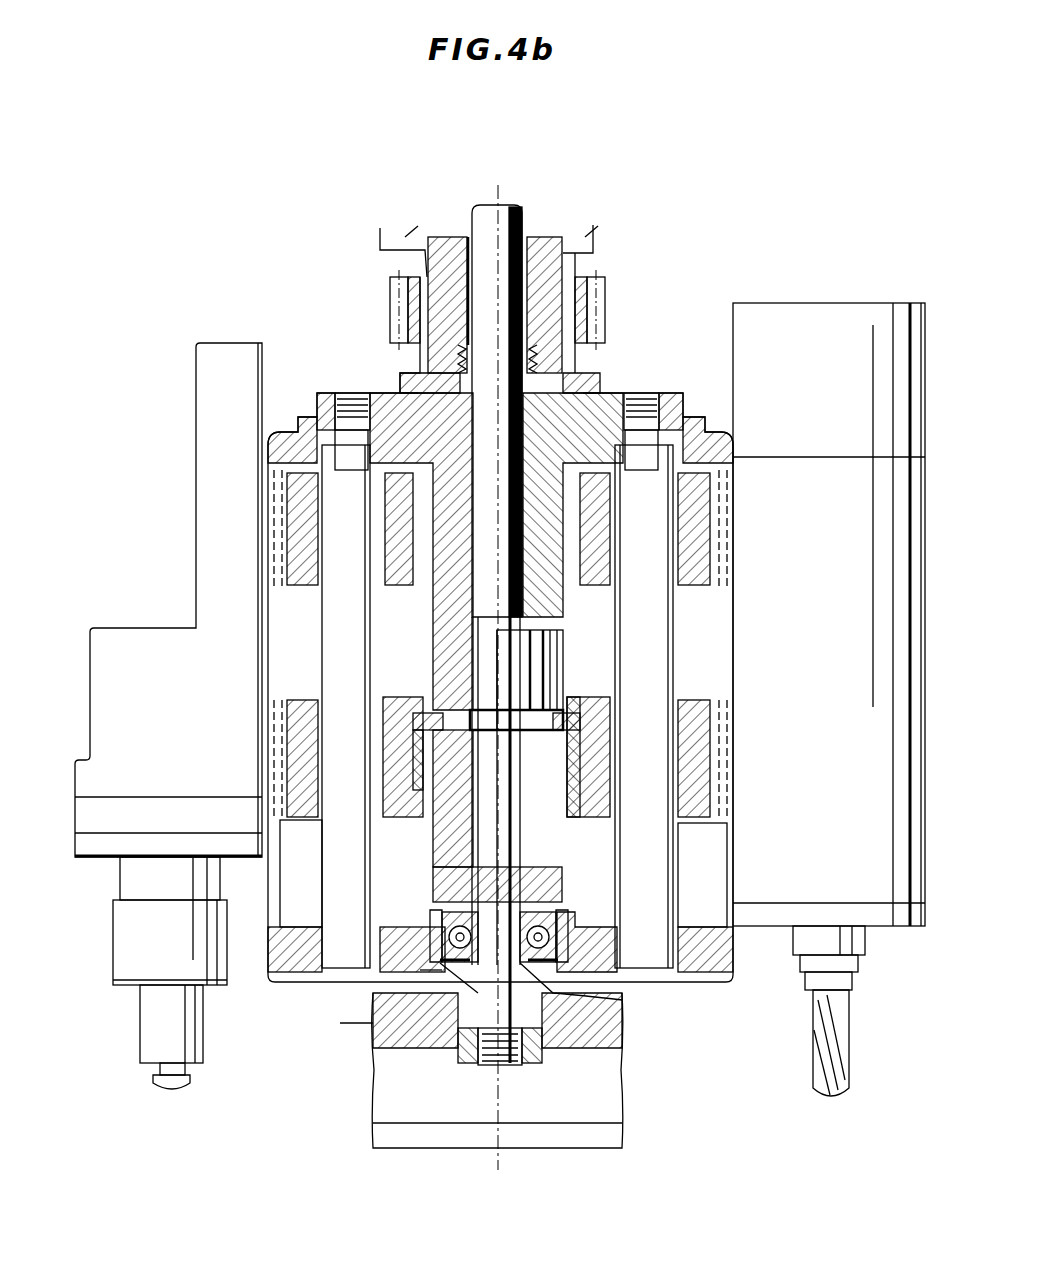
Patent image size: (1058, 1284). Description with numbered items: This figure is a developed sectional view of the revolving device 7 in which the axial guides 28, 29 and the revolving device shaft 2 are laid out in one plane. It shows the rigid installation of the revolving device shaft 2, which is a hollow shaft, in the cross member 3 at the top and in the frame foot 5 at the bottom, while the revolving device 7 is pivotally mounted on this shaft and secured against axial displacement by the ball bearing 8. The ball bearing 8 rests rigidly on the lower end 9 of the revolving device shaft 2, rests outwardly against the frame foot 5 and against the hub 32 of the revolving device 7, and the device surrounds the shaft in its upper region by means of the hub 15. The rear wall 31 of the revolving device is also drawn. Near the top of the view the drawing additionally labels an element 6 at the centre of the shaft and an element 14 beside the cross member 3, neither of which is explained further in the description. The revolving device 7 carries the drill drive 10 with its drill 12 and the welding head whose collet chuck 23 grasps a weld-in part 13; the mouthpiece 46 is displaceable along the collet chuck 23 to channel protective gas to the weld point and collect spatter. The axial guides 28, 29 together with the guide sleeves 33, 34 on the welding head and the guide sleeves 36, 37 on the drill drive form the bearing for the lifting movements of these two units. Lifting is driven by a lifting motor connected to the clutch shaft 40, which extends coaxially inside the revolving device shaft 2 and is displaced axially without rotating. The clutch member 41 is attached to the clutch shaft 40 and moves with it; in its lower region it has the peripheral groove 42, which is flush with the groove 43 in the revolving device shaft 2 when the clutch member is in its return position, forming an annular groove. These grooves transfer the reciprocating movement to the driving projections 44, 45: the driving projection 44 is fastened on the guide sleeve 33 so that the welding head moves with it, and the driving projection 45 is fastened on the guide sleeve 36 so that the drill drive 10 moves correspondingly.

The revolving device shaft 2 is at (450, 475).
The cross member 3 is at (556, 258).
The frame foot 5 is at (400, 1024).
The rod 6 is at (507, 200).
The revolving device 7 is at (267, 966).
The ball bearing 8 is at (540, 938).
The lower end 9 is at (507, 1001).
The drill drive 10 is at (821, 740).
The drill 12 is at (822, 1062).
The weld-in part 13 is at (175, 1090).
The bolt 14 is at (395, 300).
The hub 15 is at (583, 370).
The collet chuck 23 is at (160, 1066).
The axial guide 28 is at (345, 612).
The axial guide 29 is at (653, 634).
The rear wall 31 is at (697, 862).
The hub 32 is at (437, 940).
The guide sleeve 33 is at (310, 794).
The guide sleeve 34 is at (300, 503).
The guide sleeve 36 is at (600, 810).
The guide sleeve 37 is at (692, 523).
The clutch shaft 40 is at (483, 215).
The clutch member 41 is at (527, 660).
The peripheral groove 42 is at (510, 720).
The groove 43 is at (487, 717).
The driving projection 44 is at (437, 720).
The driving projection 45 is at (563, 723).
The mouthpiece 46 is at (132, 951).